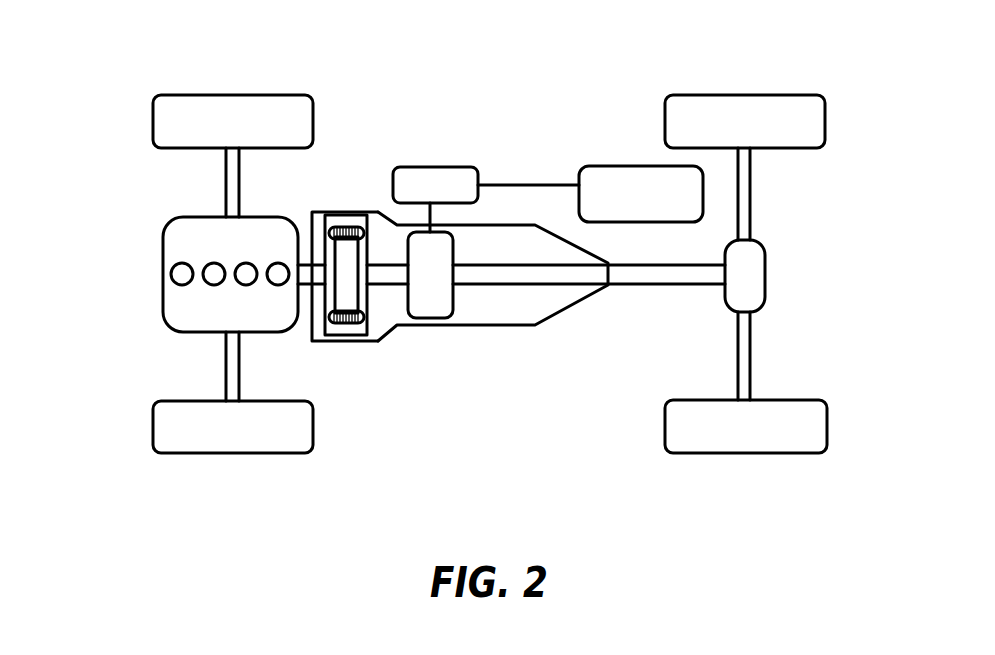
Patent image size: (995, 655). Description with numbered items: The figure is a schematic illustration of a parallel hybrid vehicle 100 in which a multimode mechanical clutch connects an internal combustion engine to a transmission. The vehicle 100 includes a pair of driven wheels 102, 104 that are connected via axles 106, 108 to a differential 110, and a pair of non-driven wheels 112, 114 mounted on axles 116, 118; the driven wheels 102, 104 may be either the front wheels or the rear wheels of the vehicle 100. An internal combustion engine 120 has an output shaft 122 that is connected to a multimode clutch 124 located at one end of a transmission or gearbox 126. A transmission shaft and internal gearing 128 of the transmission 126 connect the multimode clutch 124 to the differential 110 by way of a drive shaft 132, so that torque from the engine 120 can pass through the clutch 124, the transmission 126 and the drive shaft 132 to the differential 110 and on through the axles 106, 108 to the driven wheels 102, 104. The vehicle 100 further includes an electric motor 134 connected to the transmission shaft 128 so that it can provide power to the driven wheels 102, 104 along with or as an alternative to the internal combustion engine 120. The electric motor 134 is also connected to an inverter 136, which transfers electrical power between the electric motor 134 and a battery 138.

The parallel hybrid vehicle 100 is at (98, 66).
The driven wheel 102 is at (725, 95).
The driven wheel 104 is at (663, 433).
The axle 106 is at (752, 197).
The axle 108 is at (752, 357).
The differential 110 is at (768, 278).
The non-driven wheel 112 is at (188, 95).
The non-driven wheel 114 is at (152, 428).
The axle 116 is at (225, 195).
The axle 118 is at (225, 370).
The internal combustion engine 120 is at (163, 275).
The output shaft 122 is at (310, 265).
The multimode clutch 124 is at (355, 338).
The transmission 126 is at (577, 303).
The transmission shaft and internal gearing 128 is at (498, 283).
The drive shaft 132 is at (650, 285).
The electric motor 134 is at (437, 318).
The inverter 136 is at (432, 166).
The battery 138 is at (632, 166).